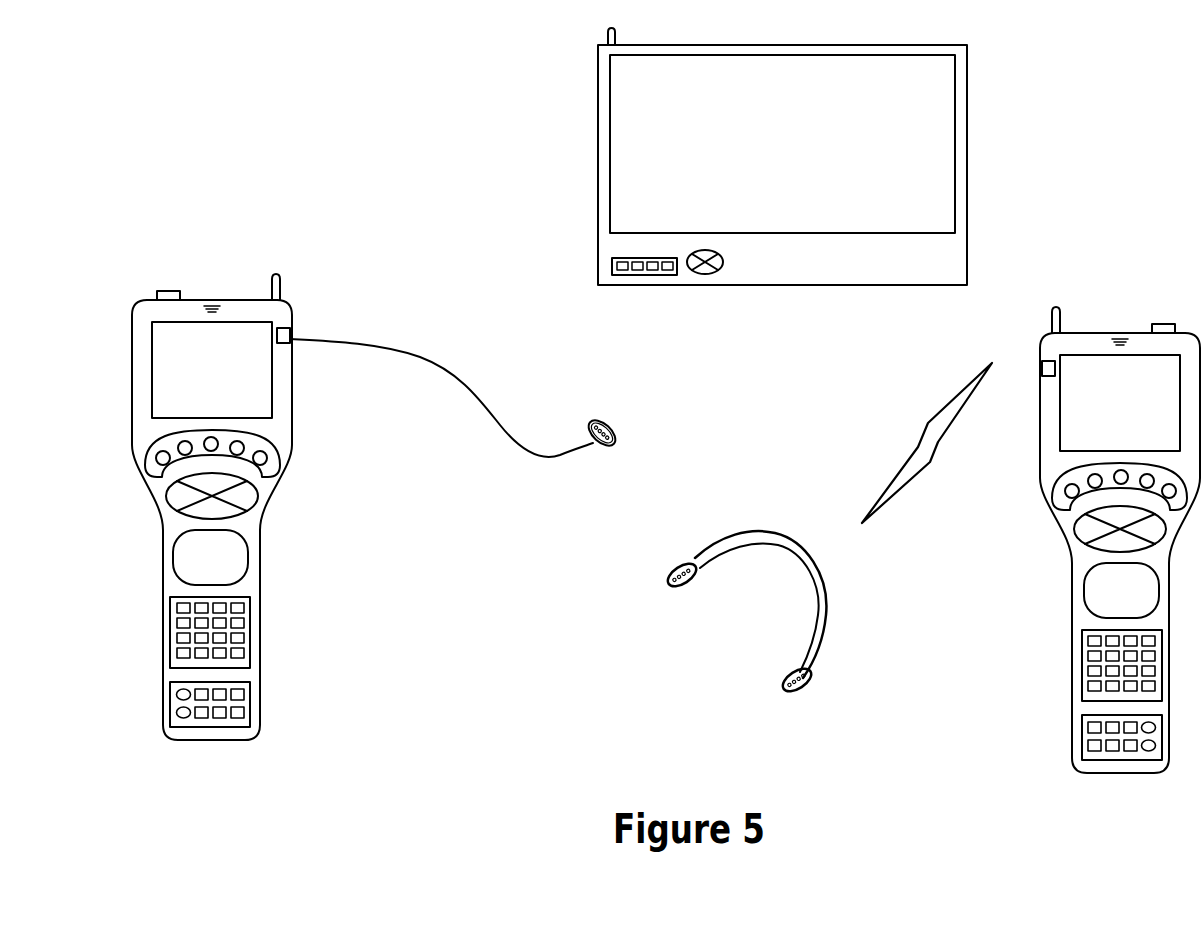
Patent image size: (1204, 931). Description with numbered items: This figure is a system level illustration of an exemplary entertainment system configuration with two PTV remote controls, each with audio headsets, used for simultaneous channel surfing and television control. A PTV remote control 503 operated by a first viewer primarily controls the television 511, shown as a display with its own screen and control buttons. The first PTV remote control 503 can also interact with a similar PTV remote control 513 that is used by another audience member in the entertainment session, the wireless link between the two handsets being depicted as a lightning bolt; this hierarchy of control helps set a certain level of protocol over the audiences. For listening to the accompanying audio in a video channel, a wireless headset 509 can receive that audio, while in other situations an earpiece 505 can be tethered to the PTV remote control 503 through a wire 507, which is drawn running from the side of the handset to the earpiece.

The PTV remote control 503 is at (226, 299).
The earpiece 505 is at (605, 421).
The wire 507 is at (420, 357).
The wireless headset 509 is at (735, 534).
The television 511 is at (782, 156).
The PTV remote control 513 is at (1105, 331).